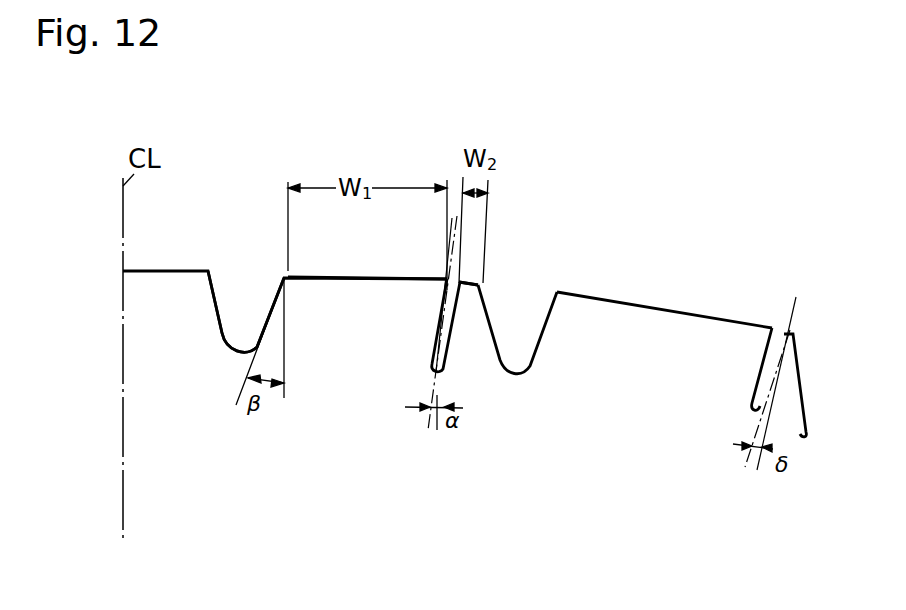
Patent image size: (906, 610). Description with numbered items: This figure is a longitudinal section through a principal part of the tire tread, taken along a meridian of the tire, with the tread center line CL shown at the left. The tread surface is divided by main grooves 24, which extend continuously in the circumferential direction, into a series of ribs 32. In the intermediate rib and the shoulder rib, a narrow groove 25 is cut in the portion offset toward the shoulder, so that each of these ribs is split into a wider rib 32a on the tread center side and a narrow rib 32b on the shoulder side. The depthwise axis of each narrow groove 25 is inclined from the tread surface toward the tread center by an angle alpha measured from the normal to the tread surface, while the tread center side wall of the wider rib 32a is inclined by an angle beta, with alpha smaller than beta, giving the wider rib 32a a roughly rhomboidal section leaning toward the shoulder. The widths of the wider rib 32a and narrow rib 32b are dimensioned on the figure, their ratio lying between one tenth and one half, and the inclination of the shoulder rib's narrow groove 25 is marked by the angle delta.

The rib 32 is at (161, 262).
The main groove 24 is at (238, 313).
The wider rib 32a is at (337, 290).
The narrow rib 32b is at (468, 283).
The narrow groove 25 is at (445, 280).